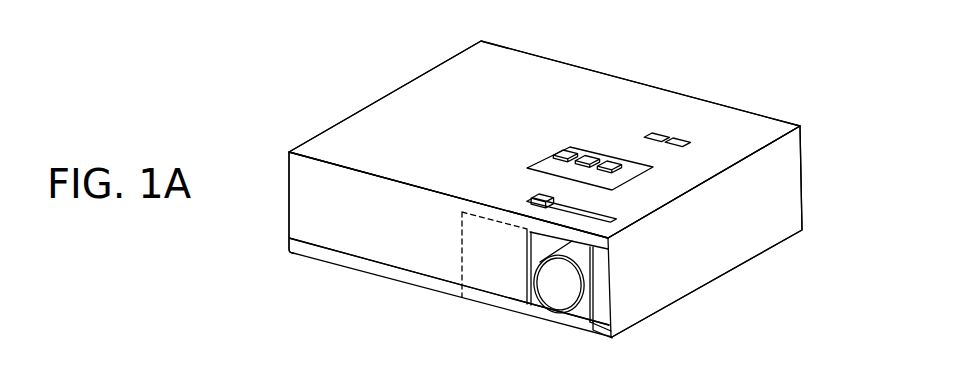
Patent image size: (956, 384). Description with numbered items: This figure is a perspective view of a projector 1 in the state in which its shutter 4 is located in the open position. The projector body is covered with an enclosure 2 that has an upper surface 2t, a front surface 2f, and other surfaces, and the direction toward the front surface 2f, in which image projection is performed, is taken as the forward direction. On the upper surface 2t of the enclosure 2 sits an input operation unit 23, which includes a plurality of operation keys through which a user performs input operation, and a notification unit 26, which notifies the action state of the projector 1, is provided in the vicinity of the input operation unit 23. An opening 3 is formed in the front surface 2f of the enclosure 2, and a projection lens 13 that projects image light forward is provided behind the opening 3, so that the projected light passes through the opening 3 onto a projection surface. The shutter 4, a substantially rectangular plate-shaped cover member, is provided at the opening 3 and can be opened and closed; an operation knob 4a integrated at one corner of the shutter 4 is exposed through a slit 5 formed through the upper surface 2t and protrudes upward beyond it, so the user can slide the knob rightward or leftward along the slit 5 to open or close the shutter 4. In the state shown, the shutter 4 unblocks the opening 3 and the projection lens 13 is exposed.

The projector 1 is at (813, 88).
The enclosure 2 is at (742, 120).
The upper surface 2t is at (457, 67).
The front surface 2f is at (307, 221).
The opening 3 is at (582, 313).
The shutter 4 is at (472, 249).
The operation knob 4a is at (540, 194).
The slit 5 is at (602, 221).
The projection lens 13 is at (553, 290).
The input operation unit 23 is at (571, 152).
The notification unit 26 is at (657, 133).